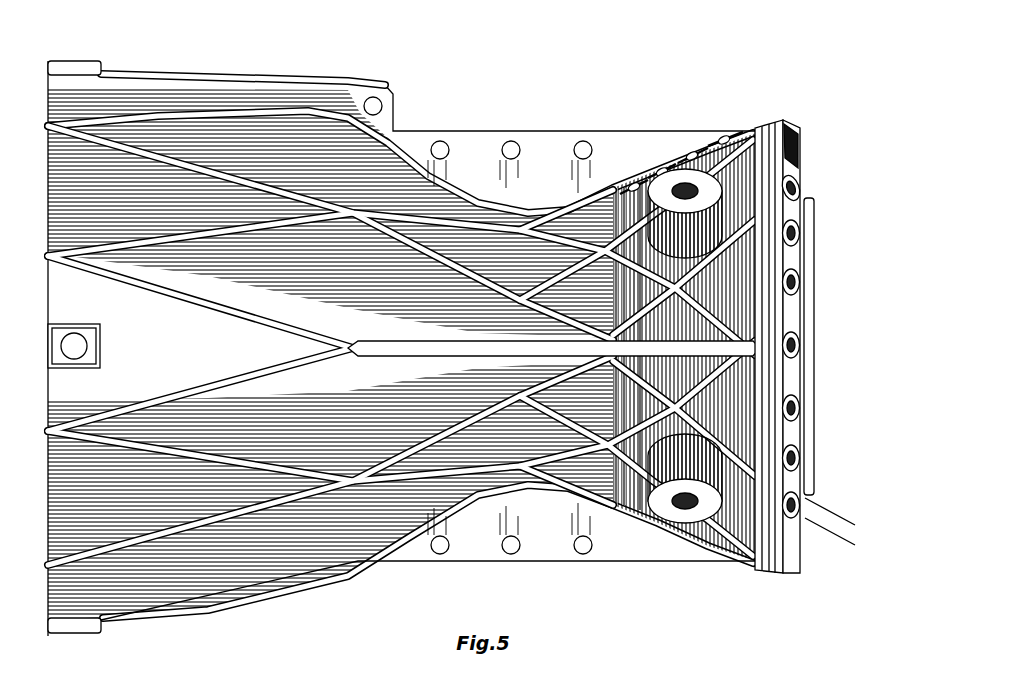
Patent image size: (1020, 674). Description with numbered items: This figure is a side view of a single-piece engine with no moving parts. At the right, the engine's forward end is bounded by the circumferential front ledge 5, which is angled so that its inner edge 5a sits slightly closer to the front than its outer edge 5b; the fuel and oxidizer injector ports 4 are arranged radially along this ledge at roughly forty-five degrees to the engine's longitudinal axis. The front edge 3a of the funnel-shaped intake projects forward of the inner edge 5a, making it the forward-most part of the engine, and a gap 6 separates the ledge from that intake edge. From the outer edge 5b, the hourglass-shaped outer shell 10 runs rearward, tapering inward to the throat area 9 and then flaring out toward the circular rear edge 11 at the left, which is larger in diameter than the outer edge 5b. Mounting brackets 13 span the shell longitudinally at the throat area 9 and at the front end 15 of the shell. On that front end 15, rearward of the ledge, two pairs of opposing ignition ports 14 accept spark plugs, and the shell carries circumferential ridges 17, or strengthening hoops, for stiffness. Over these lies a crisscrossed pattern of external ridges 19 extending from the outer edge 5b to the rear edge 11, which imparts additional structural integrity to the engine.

The front edge of the intake 3a is at (807, 313).
The fuel and oxidizer injector ports 4 is at (788, 282).
The circumferential front ledge 5 is at (793, 258).
The inner edge of the circumferential front ledge 5a is at (795, 362).
The outer edge of the circumferential front ledge 5b is at (773, 567).
The gap 6 is at (829, 538).
The throat area 9 is at (512, 473).
The outer shell 10 is at (200, 547).
The rear edge 11 is at (38, 104).
The mounting brackets 13 is at (540, 143).
The ignition ports 14 is at (677, 180).
The front end of the outer shell 15 is at (707, 562).
The circumferential ridges 17 is at (720, 127).
The external ridges 19 is at (227, 207).